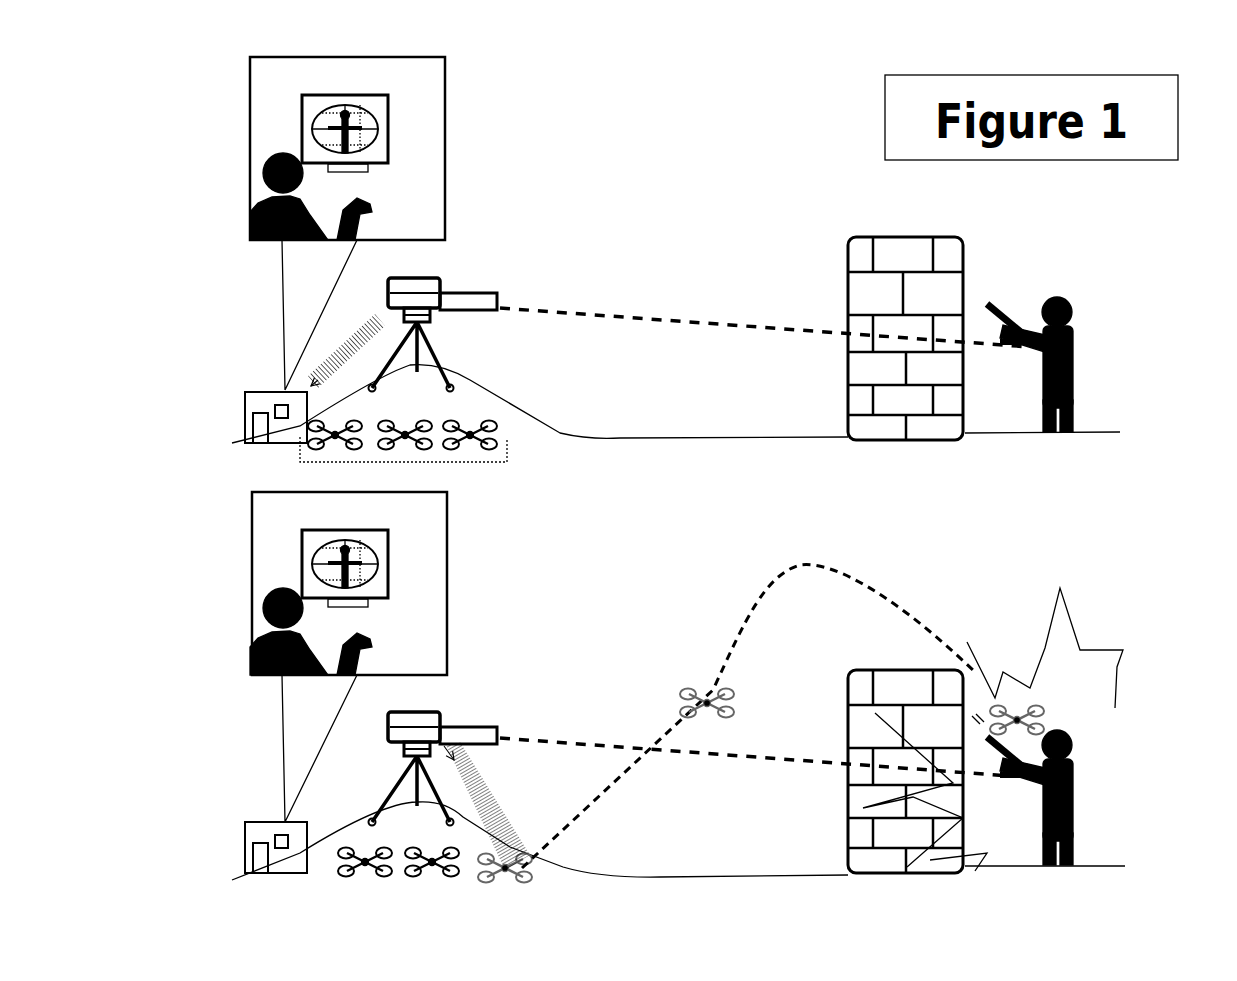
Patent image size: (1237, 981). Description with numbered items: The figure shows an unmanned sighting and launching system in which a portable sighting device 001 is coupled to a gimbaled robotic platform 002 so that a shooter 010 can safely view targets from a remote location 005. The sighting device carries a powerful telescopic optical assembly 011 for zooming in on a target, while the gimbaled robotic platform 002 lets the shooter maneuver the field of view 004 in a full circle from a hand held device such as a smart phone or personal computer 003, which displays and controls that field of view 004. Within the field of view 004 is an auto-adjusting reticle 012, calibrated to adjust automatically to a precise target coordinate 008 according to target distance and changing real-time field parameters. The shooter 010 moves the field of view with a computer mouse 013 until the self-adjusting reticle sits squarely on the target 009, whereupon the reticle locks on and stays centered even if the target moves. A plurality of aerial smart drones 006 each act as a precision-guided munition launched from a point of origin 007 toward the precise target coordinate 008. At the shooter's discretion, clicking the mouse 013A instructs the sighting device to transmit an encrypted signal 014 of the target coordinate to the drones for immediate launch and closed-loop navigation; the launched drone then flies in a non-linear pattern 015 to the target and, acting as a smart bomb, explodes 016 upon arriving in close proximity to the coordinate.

The portable sighting device 001 is at (430, 276).
The gimbaled robotic platform 002 is at (434, 317).
The personal computer 003 is at (372, 170).
The field of view 004 is at (296, 110).
The remote location 005 is at (255, 382).
The aerial smart drones 006 is at (492, 478).
The point of origin 007 is at (537, 870).
The precise target coordinate 008 is at (1035, 365).
The target 009 is at (378, 130).
The shooter 010 is at (248, 225).
The telescopic optical assembly 011 is at (507, 298).
The auto-adjusting reticle 012 is at (302, 143).
The computer mouse 013 is at (372, 203).
The mouse click 013A is at (372, 633).
The encrypted signal 014 is at (492, 788).
The non-linear pattern 015 is at (782, 566).
The explosion 016 is at (1083, 640).